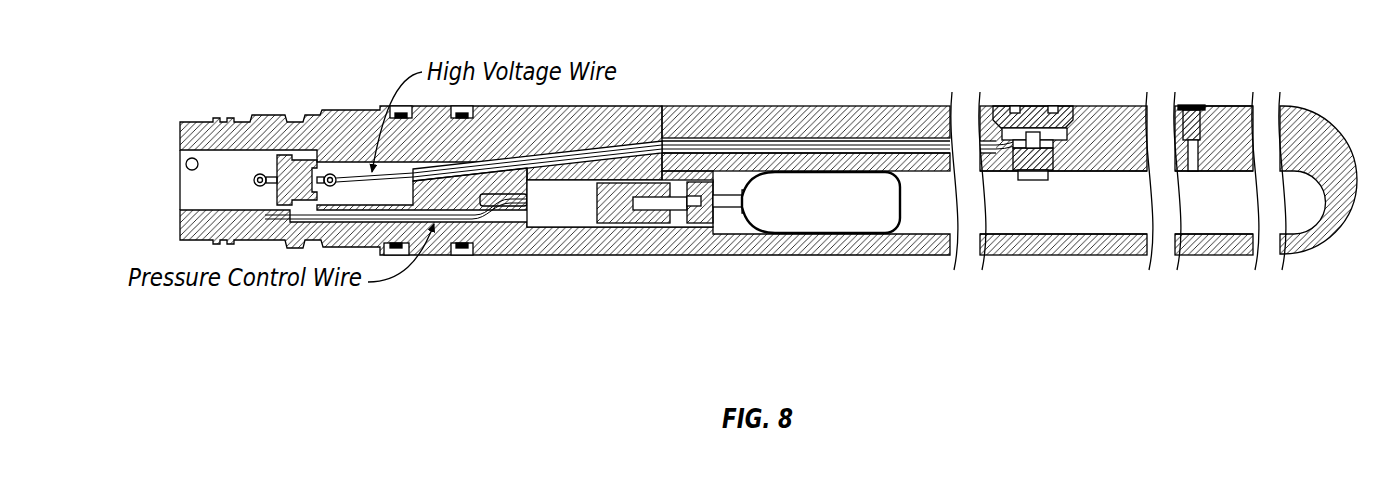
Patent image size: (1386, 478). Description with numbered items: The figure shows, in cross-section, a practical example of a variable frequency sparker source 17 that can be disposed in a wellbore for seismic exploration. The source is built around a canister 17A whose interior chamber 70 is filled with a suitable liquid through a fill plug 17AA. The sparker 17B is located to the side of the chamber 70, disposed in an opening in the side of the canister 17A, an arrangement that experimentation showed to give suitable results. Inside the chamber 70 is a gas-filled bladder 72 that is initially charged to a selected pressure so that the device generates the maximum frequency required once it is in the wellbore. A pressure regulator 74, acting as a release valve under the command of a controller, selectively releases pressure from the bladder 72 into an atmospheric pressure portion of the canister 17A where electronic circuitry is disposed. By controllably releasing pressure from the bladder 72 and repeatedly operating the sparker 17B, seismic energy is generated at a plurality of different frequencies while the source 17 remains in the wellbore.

The source 17 is at (121, 163).
The canister 17A is at (1233, 104).
The fill plug 17AA is at (1193, 103).
The sparker 17B is at (1035, 187).
The interior chamber 70 is at (1218, 210).
The gas-filled bladder 72 is at (758, 178).
The pressure regulator 74 is at (601, 222).